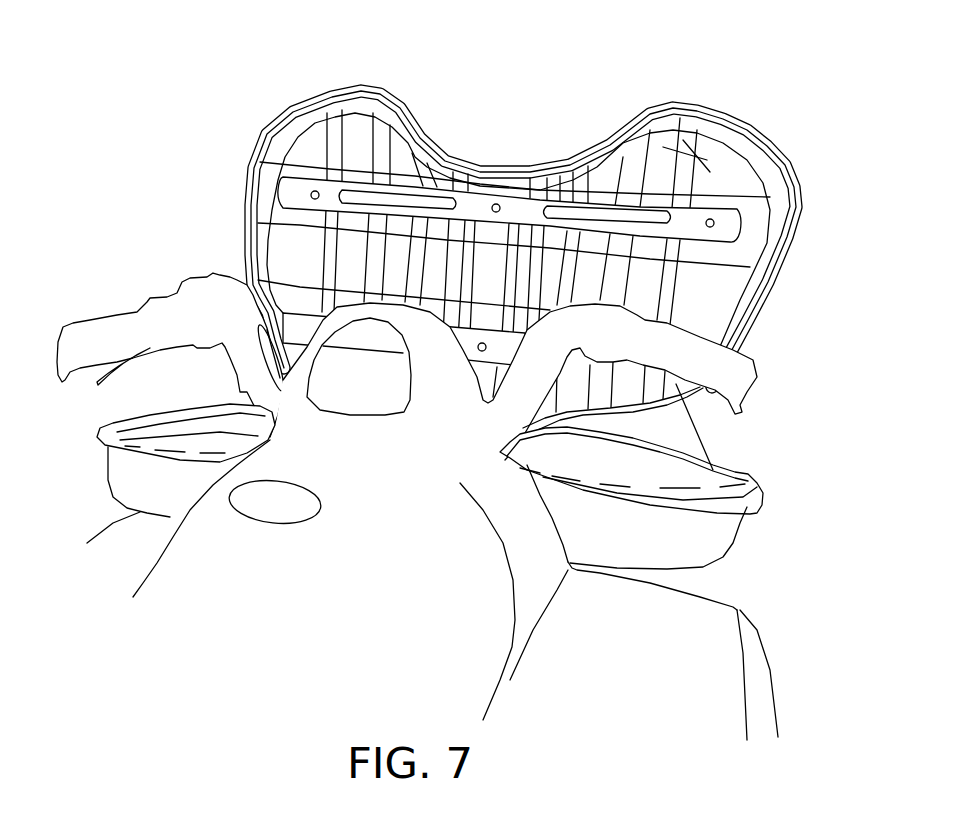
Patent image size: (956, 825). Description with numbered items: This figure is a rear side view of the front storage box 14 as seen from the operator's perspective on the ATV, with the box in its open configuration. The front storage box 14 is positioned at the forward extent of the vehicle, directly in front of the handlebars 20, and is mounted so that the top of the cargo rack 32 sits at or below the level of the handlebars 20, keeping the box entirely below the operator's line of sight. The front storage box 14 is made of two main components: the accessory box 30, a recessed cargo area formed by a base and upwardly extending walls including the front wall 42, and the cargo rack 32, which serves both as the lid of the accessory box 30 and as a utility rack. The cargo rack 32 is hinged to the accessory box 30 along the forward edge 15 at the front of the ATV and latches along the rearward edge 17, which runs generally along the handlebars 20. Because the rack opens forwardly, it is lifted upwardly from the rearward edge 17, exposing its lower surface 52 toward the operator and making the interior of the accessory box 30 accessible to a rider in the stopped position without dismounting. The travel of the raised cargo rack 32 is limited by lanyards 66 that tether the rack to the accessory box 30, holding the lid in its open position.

The front storage box 14 is at (523, 195).
The forward edge 15 is at (563, 314).
The rearward edge 17 is at (613, 417).
The handlebars 20 is at (172, 333).
The accessory box 30 is at (658, 470).
The cargo rack 32 is at (475, 239).
The front wall 42 is at (644, 646).
The lower surface 52 is at (553, 232).
The lanyards 66 is at (640, 442).